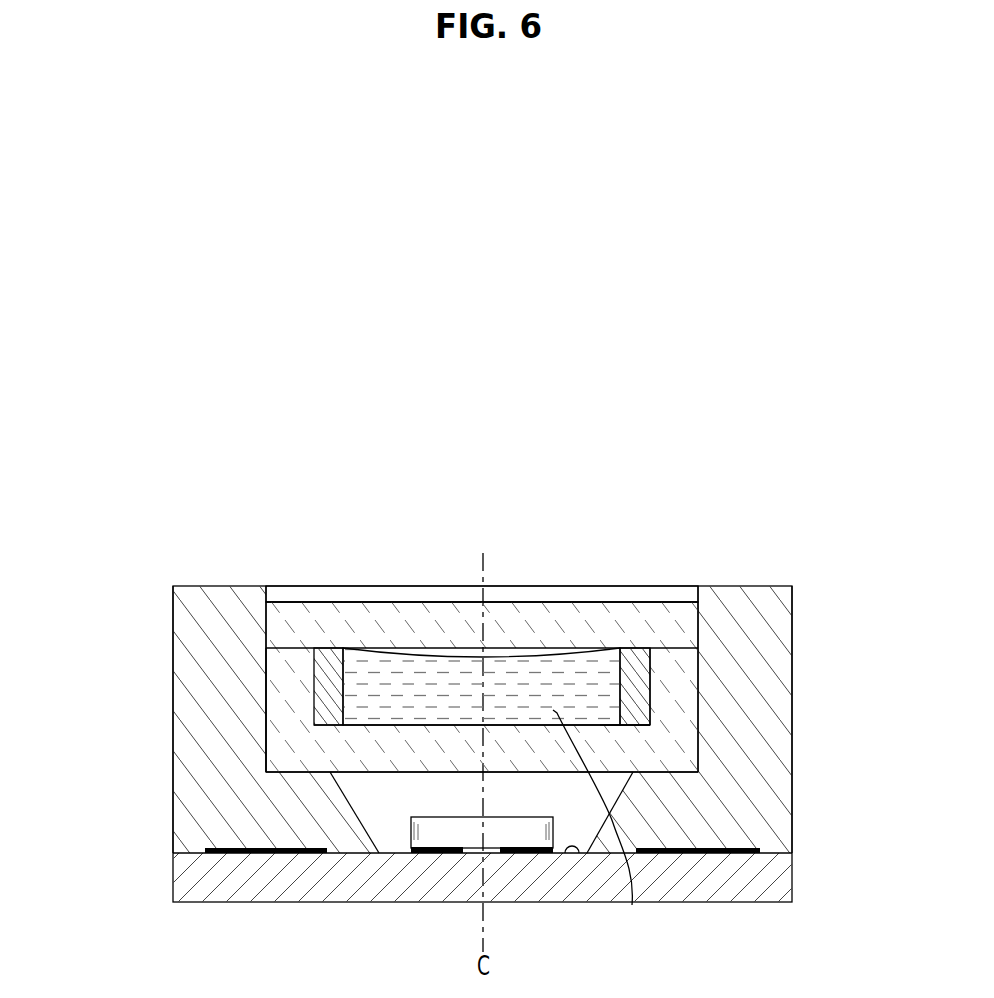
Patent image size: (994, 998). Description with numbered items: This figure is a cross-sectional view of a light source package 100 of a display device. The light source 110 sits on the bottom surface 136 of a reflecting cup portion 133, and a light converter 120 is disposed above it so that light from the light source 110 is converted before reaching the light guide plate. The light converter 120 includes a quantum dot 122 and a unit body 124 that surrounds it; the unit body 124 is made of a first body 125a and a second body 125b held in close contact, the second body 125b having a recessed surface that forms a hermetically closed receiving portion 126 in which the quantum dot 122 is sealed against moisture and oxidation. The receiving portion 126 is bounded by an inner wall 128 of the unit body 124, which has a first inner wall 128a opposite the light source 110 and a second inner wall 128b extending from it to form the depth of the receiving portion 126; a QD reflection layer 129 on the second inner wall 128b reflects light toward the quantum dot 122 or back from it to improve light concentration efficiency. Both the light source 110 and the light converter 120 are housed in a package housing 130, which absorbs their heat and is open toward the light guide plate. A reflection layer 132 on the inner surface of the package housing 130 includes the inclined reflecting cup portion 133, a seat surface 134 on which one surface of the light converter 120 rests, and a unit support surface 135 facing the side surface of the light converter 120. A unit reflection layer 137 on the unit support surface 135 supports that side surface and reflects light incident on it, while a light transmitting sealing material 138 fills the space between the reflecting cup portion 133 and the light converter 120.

The light source package 100 is at (790, 543).
The light source 110 is at (418, 835).
The light converter 120 is at (312, 594).
The quantum dot 122 is at (387, 680).
The unit body 124 is at (482, 607).
The first body 125a is at (462, 618).
The second body 125b is at (510, 750).
The receiving portion 126 is at (632, 905).
The inner wall 128 is at (770, 722).
The first inner wall 128a is at (600, 727).
The second inner wall 128b is at (650, 693).
The QD reflection layer 129 is at (633, 665).
The package housing 130 is at (745, 600).
The reflection layer 132 is at (412, 719).
The reflecting cup portion 133 is at (356, 821).
The seat surface 134 is at (316, 770).
The unit support surface 135 is at (264, 672).
The bottom surface 136 is at (565, 853).
The unit reflection layer 137 is at (277, 618).
The sealing material 138 is at (385, 812).